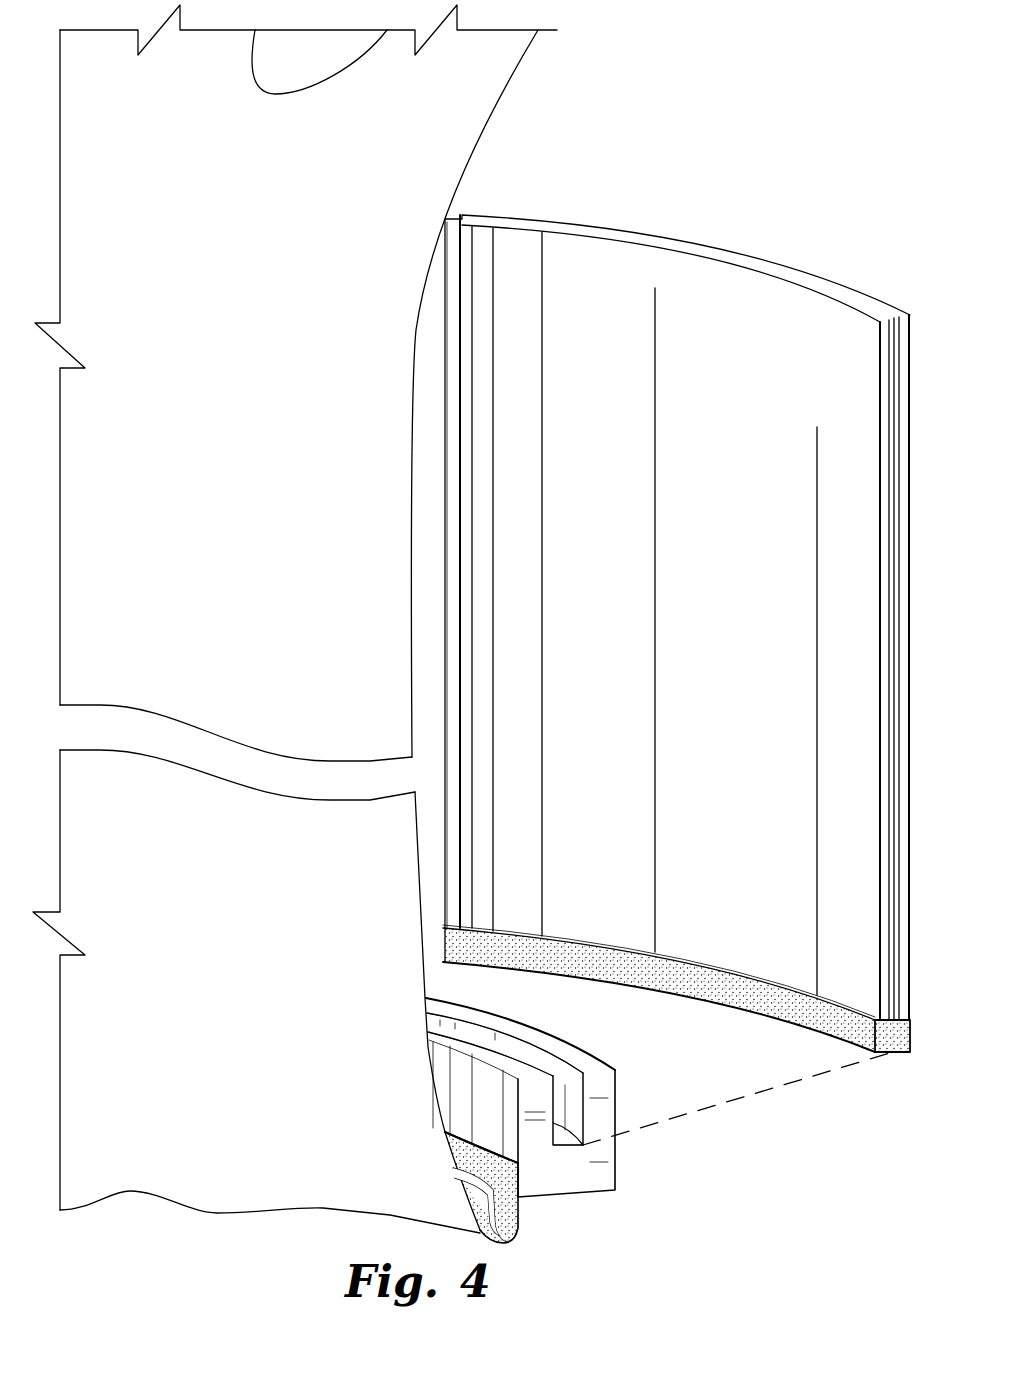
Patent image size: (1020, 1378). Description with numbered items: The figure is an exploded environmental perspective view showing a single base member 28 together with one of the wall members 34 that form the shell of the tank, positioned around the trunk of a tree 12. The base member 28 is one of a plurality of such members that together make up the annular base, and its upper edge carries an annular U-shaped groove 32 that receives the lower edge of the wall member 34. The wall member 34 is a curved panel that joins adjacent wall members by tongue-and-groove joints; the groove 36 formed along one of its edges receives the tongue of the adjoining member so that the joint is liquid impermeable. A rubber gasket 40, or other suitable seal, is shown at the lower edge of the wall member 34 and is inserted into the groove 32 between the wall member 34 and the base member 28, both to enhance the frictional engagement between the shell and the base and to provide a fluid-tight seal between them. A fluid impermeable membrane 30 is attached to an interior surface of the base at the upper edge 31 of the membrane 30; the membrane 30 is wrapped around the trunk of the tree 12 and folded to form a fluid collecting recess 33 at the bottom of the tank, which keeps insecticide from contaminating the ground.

The tree 12 is at (314, 1110).
The base member 28 is at (616, 1084).
The fluid impermeable membrane 30 is at (523, 1218).
The upper edge of the membrane 31 is at (503, 1173).
The U-shaped groove 32 is at (545, 1062).
The fluid collecting recess 33 is at (513, 1243).
The wall member 34 is at (776, 354).
The groove 36 is at (890, 699).
The rubber gasket 40 is at (897, 1053).